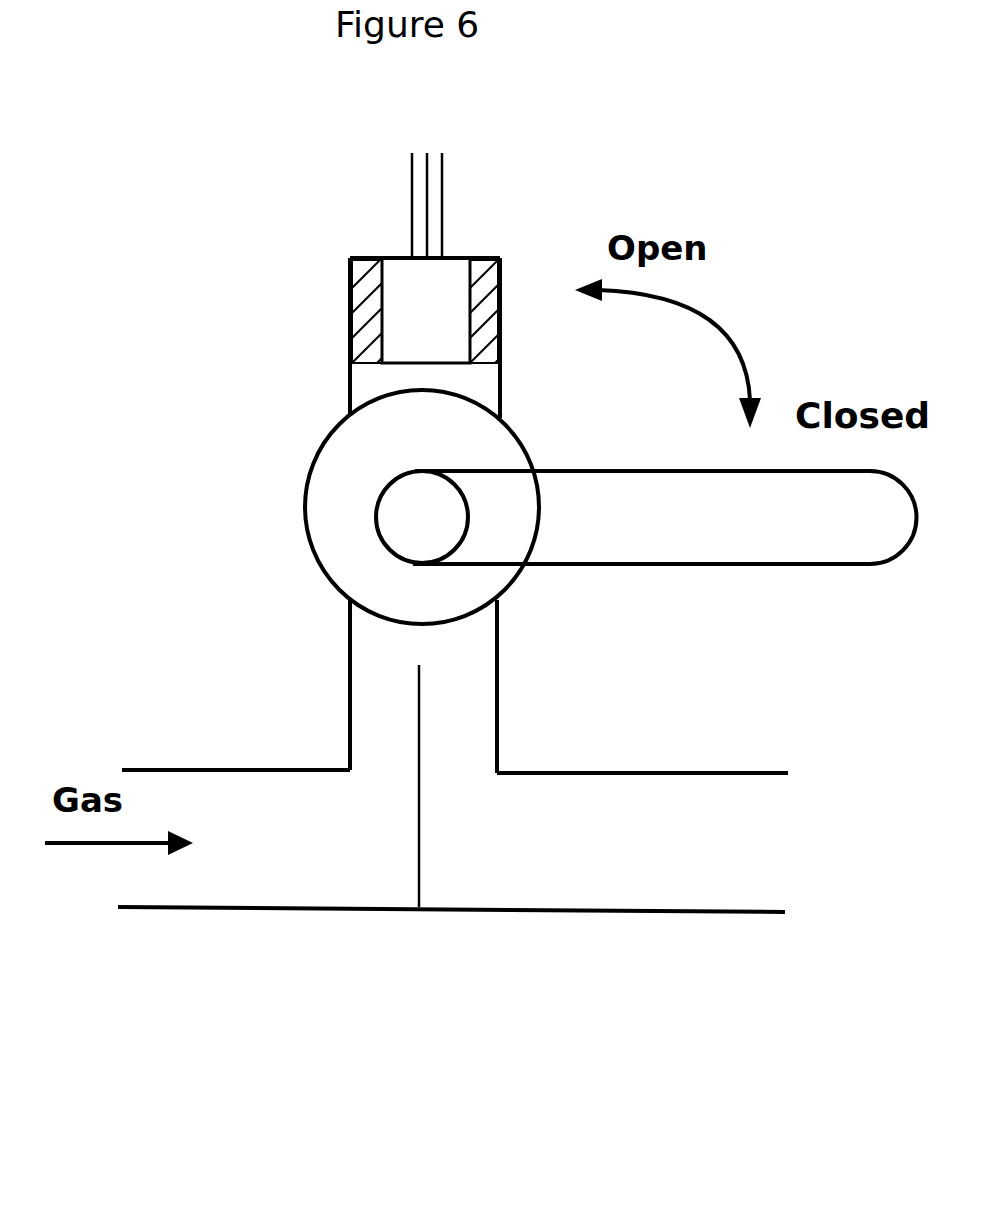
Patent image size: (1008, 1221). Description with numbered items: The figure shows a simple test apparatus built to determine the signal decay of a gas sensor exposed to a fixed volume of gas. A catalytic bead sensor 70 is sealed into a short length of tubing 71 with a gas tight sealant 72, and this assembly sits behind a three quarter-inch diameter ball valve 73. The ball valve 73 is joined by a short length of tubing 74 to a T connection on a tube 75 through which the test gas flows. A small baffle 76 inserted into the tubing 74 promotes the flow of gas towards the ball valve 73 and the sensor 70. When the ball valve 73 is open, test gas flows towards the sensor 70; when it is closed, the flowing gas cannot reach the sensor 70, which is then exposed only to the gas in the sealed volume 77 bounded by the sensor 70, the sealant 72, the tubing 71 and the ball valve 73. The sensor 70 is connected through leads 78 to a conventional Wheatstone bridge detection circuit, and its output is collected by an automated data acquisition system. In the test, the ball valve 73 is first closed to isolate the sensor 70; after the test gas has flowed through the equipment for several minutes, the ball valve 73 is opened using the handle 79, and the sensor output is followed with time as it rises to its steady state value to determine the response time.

The catalytic bead sensor 70 is at (402, 272).
The tubing 71 is at (350, 377).
The gas tight sealant 72 is at (365, 332).
The ball valve 73 is at (407, 528).
The tubing 74 is at (495, 720).
The tube 75 is at (270, 770).
The baffle 76 is at (419, 848).
The sealed volume 77 is at (483, 394).
The leads 78 is at (428, 162).
The handle 79 is at (825, 550).